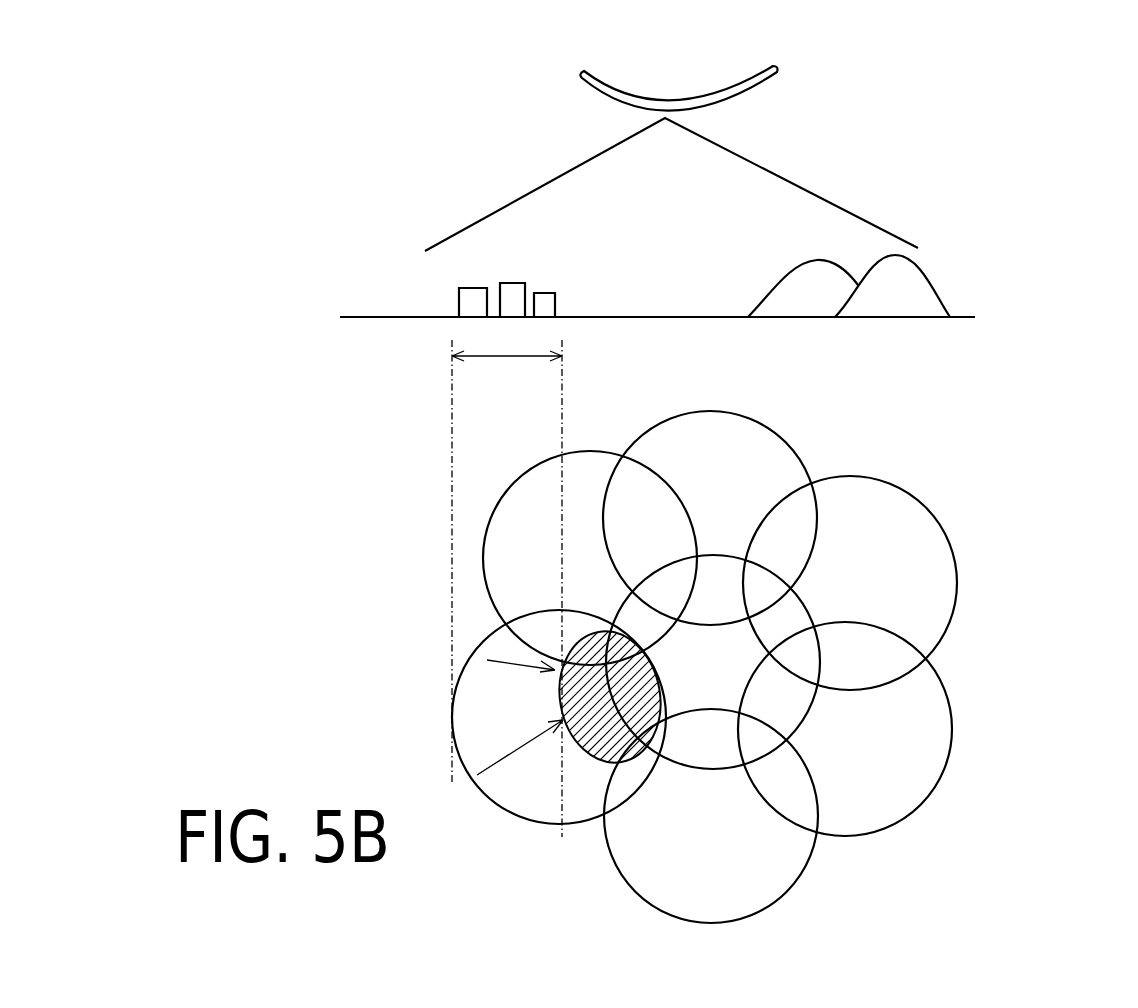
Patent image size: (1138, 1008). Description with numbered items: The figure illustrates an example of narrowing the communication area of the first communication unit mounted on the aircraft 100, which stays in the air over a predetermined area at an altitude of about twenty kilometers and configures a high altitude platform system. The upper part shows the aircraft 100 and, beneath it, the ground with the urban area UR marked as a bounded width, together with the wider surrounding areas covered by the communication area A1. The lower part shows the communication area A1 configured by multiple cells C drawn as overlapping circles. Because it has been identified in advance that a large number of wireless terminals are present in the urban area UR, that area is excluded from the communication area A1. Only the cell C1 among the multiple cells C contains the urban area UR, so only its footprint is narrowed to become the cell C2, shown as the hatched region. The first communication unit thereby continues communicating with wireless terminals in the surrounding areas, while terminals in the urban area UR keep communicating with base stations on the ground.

The aircraft 100 is at (773, 66).
The communication area A1 is at (843, 208).
The cells C is at (590, 445).
The cell C1 is at (507, 810).
The cell C2 is at (598, 763).
The urban area UR is at (507, 588).